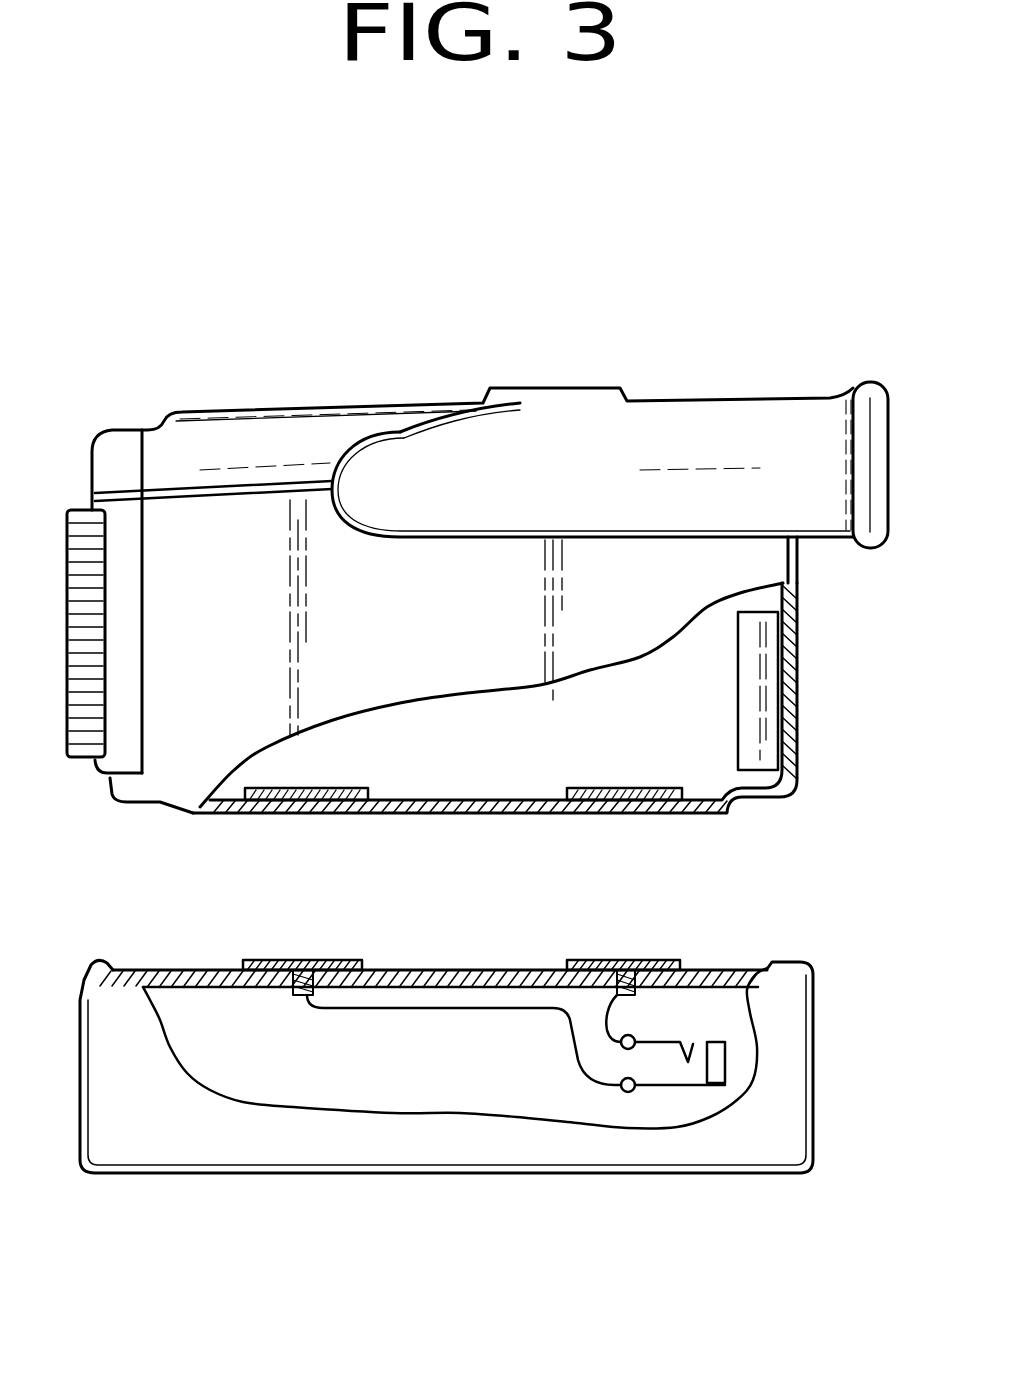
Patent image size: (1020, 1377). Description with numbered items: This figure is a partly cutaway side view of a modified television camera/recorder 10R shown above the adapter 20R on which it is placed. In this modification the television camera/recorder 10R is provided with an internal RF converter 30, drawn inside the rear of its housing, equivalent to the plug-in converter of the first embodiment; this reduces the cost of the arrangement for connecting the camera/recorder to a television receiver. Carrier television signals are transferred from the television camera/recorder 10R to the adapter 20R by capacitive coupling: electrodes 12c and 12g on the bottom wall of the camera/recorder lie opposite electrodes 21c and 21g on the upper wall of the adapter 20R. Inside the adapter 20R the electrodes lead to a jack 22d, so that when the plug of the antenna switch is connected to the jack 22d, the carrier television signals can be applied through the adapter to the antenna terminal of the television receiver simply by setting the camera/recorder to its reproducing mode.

The television camera/recorder 10R is at (492, 304).
The electrode 12g is at (350, 786).
The electrode 12c is at (622, 784).
The RF converter 30 is at (770, 713).
The adapter 20R is at (447, 1174).
The electrode 21g is at (307, 960).
The electrode 21c is at (633, 960).
The jack 22d is at (670, 1088).